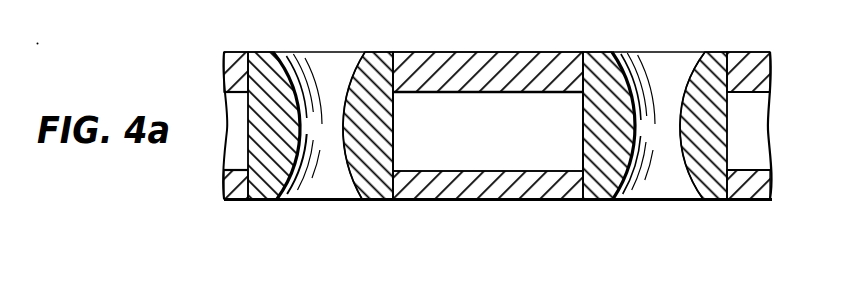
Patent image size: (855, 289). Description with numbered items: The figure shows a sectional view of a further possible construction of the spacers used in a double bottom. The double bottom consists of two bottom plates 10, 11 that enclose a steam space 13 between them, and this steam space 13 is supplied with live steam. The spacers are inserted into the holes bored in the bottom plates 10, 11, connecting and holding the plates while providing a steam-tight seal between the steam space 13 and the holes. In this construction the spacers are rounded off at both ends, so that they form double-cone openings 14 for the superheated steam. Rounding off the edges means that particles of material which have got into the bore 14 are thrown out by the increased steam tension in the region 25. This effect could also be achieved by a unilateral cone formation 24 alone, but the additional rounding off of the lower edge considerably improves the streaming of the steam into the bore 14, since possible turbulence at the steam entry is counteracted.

The bottom plate 10 is at (510, 68).
The bottom plate 11 is at (488, 185).
The steam space 13 is at (563, 108).
The double-cone opening 14 is at (669, 66).
The unilateral cone formation 24 is at (291, 68).
The region of increased steam tension 25 is at (303, 185).